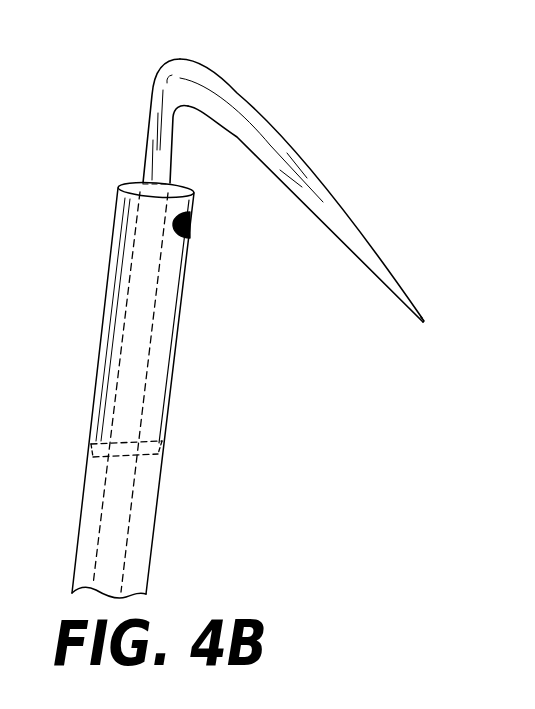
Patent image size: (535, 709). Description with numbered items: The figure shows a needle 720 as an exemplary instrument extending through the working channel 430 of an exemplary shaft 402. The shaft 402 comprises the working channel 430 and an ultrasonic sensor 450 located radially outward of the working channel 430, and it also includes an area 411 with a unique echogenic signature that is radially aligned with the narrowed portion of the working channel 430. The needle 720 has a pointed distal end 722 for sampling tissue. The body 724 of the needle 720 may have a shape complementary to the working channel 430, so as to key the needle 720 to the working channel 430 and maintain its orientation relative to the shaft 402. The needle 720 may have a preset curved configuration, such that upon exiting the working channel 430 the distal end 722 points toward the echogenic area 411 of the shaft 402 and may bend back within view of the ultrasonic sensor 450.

The shaft 402 is at (100, 337).
The area with a unique echogenic signature 411 is at (192, 226).
The working channel 430 is at (132, 400).
The ultrasonic sensor 450 is at (158, 343).
The needle 720 is at (273, 139).
The pointed distal end 722 is at (424, 318).
The body 724 is at (147, 132).